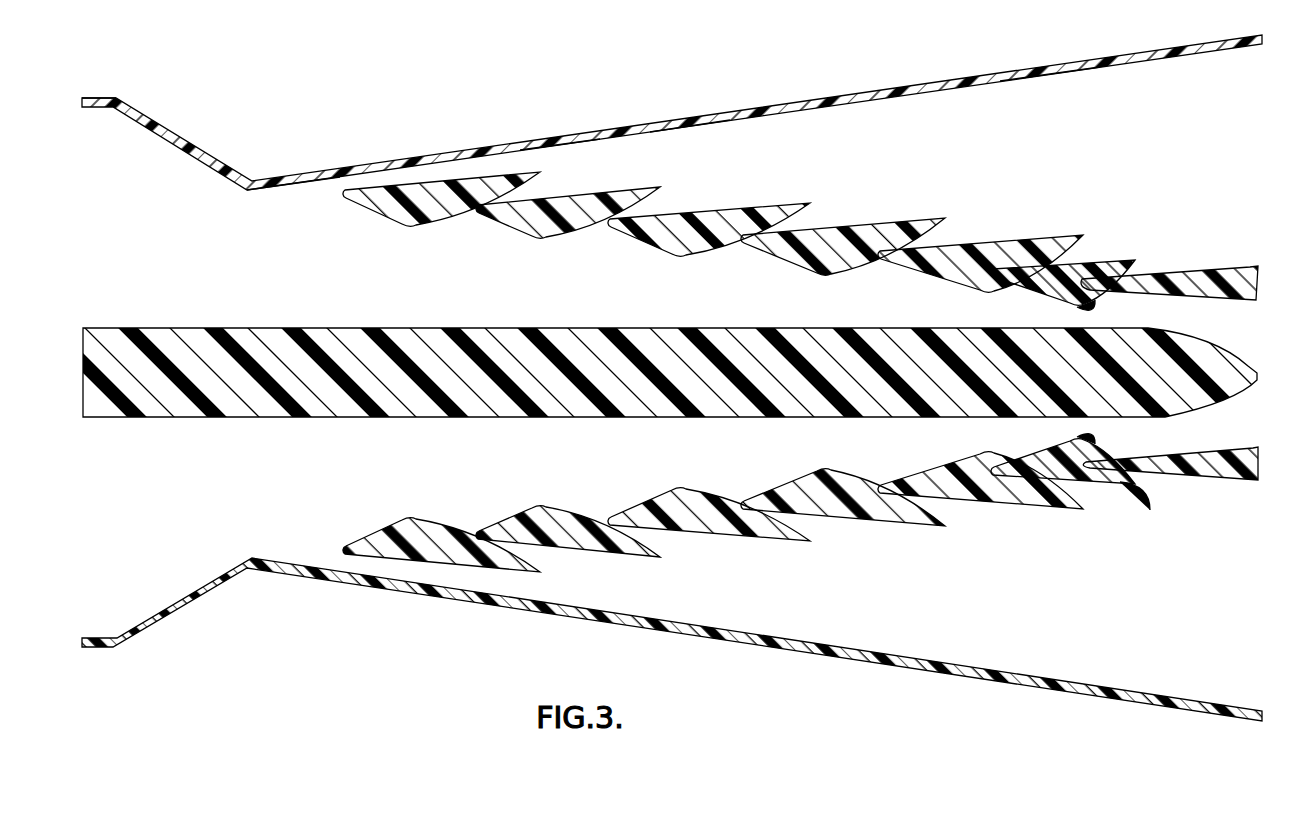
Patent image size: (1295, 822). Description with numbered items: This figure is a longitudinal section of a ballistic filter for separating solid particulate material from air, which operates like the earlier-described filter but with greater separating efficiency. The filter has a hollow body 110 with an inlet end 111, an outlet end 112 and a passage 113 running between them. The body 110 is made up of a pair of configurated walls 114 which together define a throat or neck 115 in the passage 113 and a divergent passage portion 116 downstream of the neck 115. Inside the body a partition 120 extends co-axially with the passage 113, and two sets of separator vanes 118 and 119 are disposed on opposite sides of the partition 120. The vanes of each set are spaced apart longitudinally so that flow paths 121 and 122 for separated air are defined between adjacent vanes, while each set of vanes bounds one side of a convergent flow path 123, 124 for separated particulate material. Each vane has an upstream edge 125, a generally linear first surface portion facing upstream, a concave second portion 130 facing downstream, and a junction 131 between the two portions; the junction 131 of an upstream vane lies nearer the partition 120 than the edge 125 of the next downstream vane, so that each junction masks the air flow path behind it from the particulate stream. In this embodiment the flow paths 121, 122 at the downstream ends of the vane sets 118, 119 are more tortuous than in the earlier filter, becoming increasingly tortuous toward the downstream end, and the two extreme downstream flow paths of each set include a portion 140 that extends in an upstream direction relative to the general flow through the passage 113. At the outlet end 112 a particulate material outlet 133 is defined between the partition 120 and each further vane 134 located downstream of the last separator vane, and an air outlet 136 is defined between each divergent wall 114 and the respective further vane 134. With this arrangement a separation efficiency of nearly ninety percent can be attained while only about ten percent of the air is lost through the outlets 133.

The hollow body 110 is at (882, 84).
The inlet end 111 is at (100, 140).
The outlet end 112 is at (1165, 100).
The passage 113 is at (317, 187).
The configurated walls 114 is at (562, 128).
The throat or neck 115 is at (250, 195).
The divergent passage portion 116 is at (690, 108).
The separator vanes 118 is at (438, 212).
The separator vanes 119 is at (693, 505).
The partition 120 is at (862, 410).
The flow paths 121 is at (548, 180).
The flow paths 122 is at (1063, 500).
The flow path for separated particulate material 123 is at (675, 310).
The flow path for separated particulate material 124 is at (628, 455).
The upstream edge 125 is at (345, 551).
The second portion 130 is at (528, 560).
The junction 131 is at (410, 230).
The particulate material outlet 133 is at (1238, 325).
The further vane 134 is at (1203, 276).
The air outlet 136 is at (1245, 174).
The portion of flow path 140 is at (1085, 310).